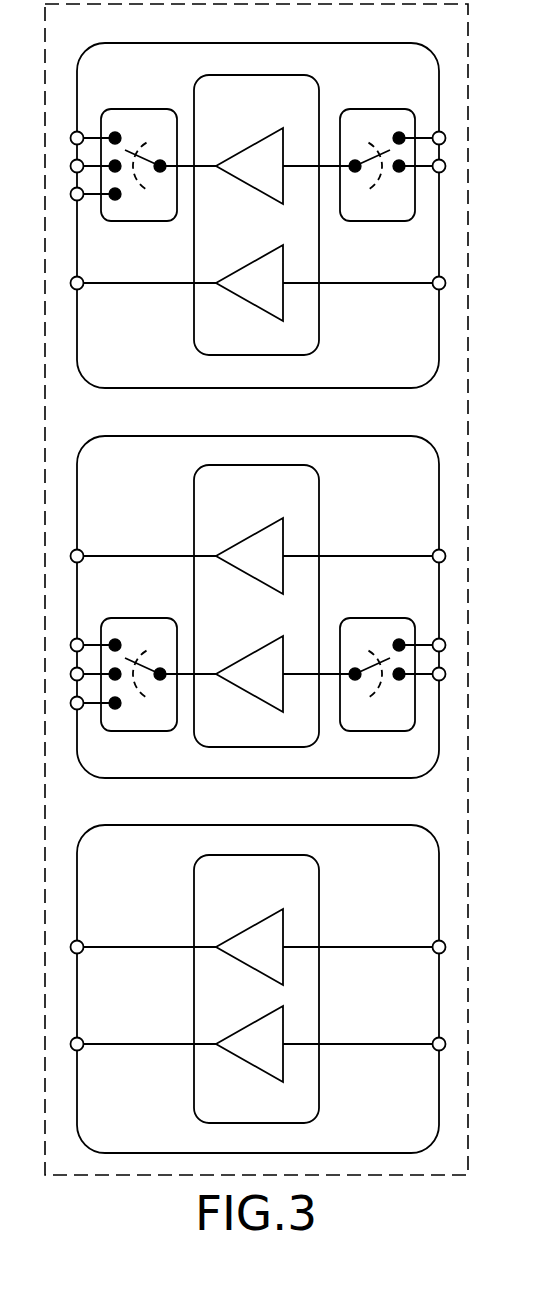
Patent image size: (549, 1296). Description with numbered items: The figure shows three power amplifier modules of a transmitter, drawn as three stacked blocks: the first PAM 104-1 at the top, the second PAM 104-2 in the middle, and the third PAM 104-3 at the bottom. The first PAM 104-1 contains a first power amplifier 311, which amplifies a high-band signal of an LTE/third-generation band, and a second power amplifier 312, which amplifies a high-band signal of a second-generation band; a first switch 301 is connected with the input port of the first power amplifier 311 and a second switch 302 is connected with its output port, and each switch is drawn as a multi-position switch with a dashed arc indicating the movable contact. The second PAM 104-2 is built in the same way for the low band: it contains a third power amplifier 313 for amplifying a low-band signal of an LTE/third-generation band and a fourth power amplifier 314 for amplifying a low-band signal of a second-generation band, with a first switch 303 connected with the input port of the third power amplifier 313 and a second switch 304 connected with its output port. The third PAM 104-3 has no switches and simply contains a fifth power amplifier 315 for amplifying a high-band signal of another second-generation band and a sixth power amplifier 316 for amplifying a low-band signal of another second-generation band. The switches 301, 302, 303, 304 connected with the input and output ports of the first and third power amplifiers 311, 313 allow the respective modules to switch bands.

The first PAM 104-1 is at (258, 200).
The second PAM 104-2 is at (258, 591).
The third PAM 104-3 is at (258, 973).
The first switch 301 is at (368, 108).
The second switch 302 is at (128, 108).
The first switch 303 is at (368, 617).
The second switch 304 is at (128, 618).
The first power amplifier 311 is at (247, 186).
The second power amplifier 312 is at (247, 303).
The third power amplifier 313 is at (247, 693).
The fourth power amplifier 314 is at (282, 519).
The fifth power amplifier 315 is at (282, 910).
The sixth power amplifier 316 is at (247, 1063).